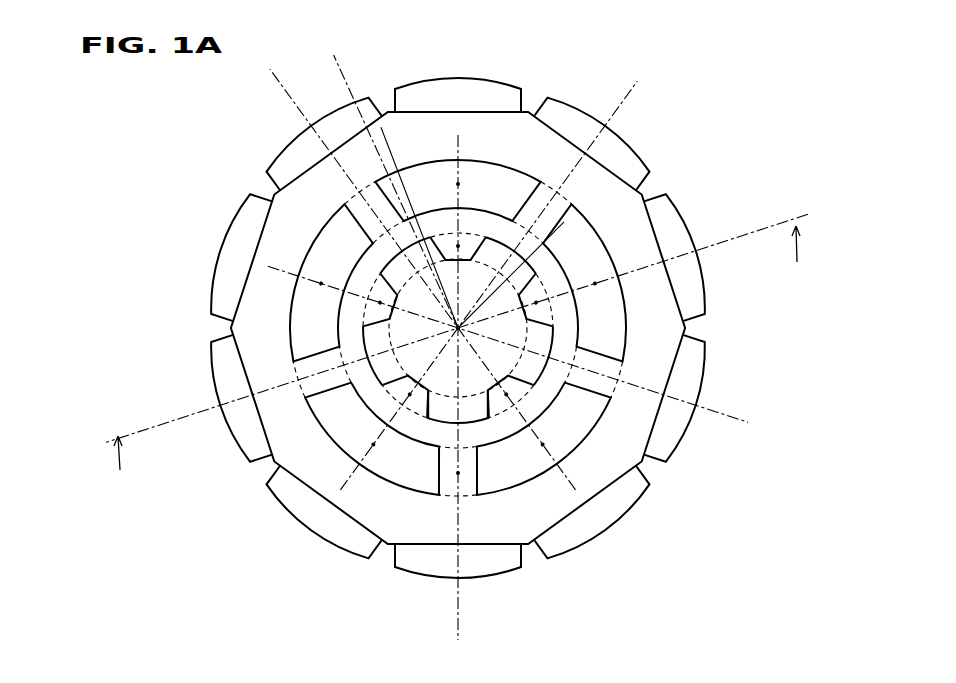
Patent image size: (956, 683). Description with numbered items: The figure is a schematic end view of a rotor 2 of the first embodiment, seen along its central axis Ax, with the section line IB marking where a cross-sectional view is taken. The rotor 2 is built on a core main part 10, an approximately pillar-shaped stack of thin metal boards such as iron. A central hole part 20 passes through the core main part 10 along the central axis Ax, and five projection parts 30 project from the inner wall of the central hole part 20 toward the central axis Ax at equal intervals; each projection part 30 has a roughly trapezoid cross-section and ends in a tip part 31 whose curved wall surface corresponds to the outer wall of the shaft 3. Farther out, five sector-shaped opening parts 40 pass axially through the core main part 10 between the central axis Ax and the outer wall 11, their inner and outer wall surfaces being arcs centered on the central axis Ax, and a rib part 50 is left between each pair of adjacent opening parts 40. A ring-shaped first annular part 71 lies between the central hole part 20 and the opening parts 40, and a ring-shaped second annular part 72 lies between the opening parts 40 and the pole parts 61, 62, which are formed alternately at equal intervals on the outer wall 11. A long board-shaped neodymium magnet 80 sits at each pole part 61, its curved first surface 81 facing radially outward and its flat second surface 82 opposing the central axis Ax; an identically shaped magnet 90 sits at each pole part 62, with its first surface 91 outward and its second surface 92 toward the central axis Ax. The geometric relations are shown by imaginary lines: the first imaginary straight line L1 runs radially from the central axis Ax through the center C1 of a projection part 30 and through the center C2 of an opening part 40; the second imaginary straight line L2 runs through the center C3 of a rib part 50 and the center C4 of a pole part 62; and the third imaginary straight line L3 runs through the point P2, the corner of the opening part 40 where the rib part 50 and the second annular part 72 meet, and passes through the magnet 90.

The rotor 2 is at (554, 46).
The shaft 3 is at (556, 258).
The core main part 10 is at (514, 104).
The outer wall 11 is at (558, 108).
The central hole part 20 is at (497, 240).
The projection part 30 is at (473, 212).
The tip part 31 is at (412, 215).
The opening part 40 is at (418, 175).
The rib part 50 is at (342, 205).
The pole part 61 is at (462, 78).
The pole part 62 is at (620, 135).
The first annular part 71 is at (432, 453).
The second annular part 72 is at (420, 577).
The magnet 80 is at (440, 79).
The first surface 81 is at (492, 78).
The second surface 82 is at (490, 113).
The magnet 90 is at (598, 120).
The first surface 91 is at (352, 110).
The second surface 92 is at (333, 158).
The central axis Ax is at (459, 324).
The center of the projection part C1 is at (456, 258).
The center of the opening part C2 is at (456, 183).
The center of the rib part C3 is at (370, 215).
The center of the pole part C4 is at (314, 130).
The first imaginary straight line L1 is at (455, 133).
The second imaginary straight line L2 is at (470, 637).
The third imaginary straight line L3 is at (390, 176).
The point P2 is at (410, 225).
The line IB- IB is at (466, 364).